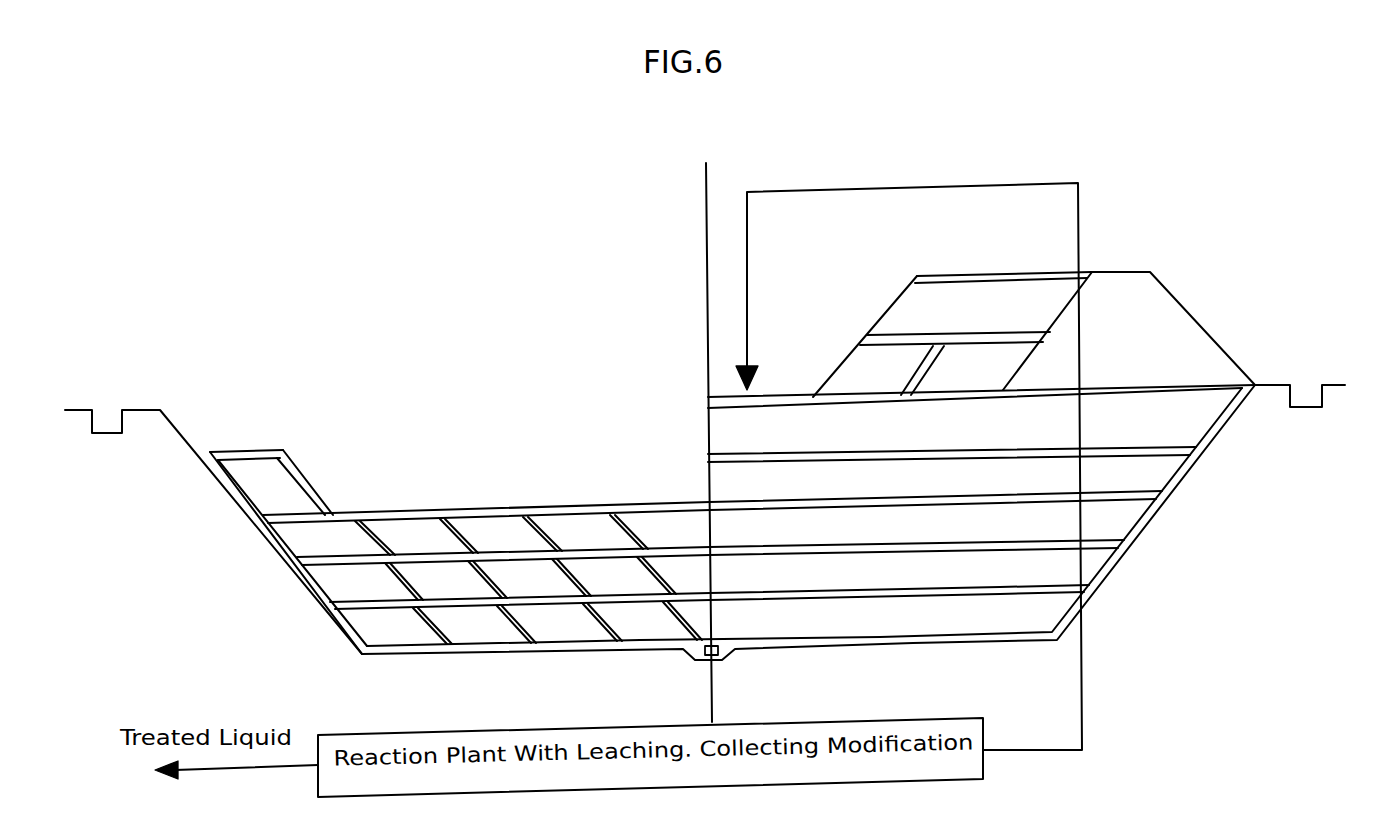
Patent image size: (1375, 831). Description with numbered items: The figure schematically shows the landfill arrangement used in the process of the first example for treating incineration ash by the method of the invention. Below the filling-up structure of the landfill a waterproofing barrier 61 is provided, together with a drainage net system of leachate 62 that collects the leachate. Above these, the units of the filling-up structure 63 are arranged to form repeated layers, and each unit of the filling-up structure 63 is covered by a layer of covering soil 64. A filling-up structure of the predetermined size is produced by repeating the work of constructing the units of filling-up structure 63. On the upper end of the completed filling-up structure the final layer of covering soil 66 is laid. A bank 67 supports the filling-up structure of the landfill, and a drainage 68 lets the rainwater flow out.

The waterproofing barrier 61 is at (915, 643).
The drainage net system of leachate 62 is at (720, 660).
The unit of the filling-up structure 63 is at (568, 618).
The layer of covering soil 64 is at (325, 606).
The final layer of covering soil 66 is at (973, 277).
The bank 67 is at (1165, 328).
The drainage 68 is at (1303, 408).